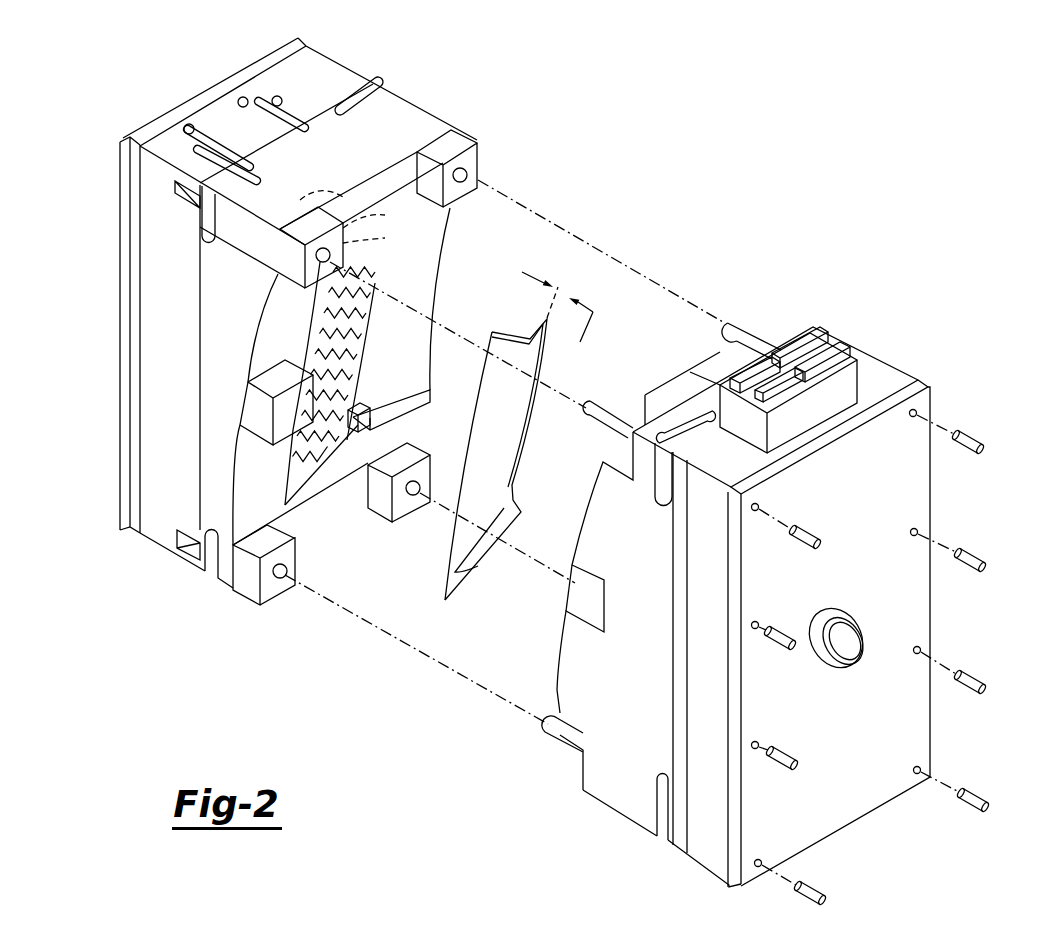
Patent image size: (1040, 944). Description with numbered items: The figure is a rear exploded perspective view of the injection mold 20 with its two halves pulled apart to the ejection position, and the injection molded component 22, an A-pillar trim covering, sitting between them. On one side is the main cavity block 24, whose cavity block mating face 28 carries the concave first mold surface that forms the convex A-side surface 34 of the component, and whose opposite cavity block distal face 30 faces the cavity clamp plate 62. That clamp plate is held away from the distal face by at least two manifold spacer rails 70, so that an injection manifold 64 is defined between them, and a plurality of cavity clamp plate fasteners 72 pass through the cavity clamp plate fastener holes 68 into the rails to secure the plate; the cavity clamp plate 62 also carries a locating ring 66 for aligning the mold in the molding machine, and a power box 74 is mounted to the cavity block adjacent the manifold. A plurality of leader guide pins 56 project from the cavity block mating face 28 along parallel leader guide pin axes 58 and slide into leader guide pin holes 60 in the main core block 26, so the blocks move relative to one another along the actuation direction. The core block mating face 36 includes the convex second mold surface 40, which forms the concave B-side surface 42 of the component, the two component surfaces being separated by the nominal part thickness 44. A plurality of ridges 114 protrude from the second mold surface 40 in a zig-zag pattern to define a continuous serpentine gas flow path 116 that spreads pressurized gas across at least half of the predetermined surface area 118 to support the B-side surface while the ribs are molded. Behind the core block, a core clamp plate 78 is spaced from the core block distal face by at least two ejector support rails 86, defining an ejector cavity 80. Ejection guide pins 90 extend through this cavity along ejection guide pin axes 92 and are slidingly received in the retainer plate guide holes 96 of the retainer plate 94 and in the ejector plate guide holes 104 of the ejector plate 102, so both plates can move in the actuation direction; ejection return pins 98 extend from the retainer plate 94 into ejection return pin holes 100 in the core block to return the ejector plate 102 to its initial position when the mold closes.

The injection mold 20 is at (842, 172).
The injection molded component 22 is at (434, 611).
The main cavity block 24 is at (588, 857).
The main core block 26 is at (167, 612).
The cavity block mating face 28 is at (698, 345).
The cavity block distal face 30 is at (718, 455).
The A-side surface 34 is at (490, 462).
The core block mating face 36 is at (423, 240).
The second mold surface 40 is at (302, 460).
The B-side surface 42 is at (524, 324).
The nominal part thickness 44 is at (557, 318).
The leader guide pin 56 is at (743, 320).
The leader guide pin axis 58 is at (557, 222).
The leader guide pin hole 60 is at (318, 256).
The cavity clamp plate 62 is at (907, 590).
The injection manifold 64 is at (734, 442).
The locating ring 66 is at (862, 633).
The cavity clamp plate fastener hole 68 is at (910, 530).
The manifold spacer rail 70 is at (880, 378).
The cavity clamp plate fastener 72 is at (786, 630).
The power box 74 is at (815, 405).
The core clamp plate 78 is at (125, 323).
The ejector cavity 80 is at (236, 115).
The ejector support rail 86 is at (330, 62).
The ejection guide pin 90 is at (278, 96).
The ejection guide pin axis 92 is at (382, 205).
The retainer plate 94 is at (250, 145).
The retainer plate guide hole 96 is at (260, 96).
The ejection return pin 98 is at (368, 82).
The ejection return pin hole 100 is at (262, 178).
The ejector plate 102 is at (245, 108).
The ejector plate guide hole 104 is at (224, 90).
The ridge 114 is at (330, 322).
The continuous gas flow path 116 is at (322, 338).
The predetermined surface area 118 is at (352, 384).